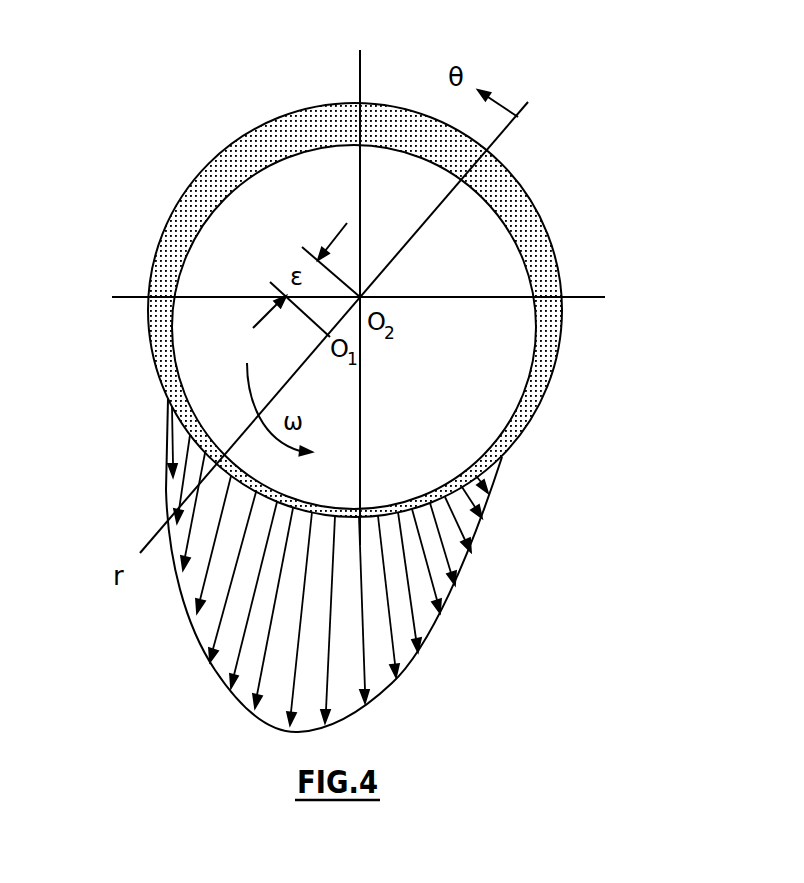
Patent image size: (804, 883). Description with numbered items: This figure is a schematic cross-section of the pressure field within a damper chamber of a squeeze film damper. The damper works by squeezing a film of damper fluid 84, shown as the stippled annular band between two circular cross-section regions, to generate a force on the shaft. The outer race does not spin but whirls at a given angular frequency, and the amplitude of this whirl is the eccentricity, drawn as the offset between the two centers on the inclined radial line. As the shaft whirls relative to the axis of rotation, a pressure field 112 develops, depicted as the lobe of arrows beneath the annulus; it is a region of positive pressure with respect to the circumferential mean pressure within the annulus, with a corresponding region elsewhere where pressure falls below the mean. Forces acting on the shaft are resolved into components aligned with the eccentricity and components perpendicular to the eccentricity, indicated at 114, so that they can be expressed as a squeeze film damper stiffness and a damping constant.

The damper fluid 84 is at (528, 228).
The pressure field 112 is at (456, 650).
The components perpendicular to the eccentricity 114 is at (531, 70).